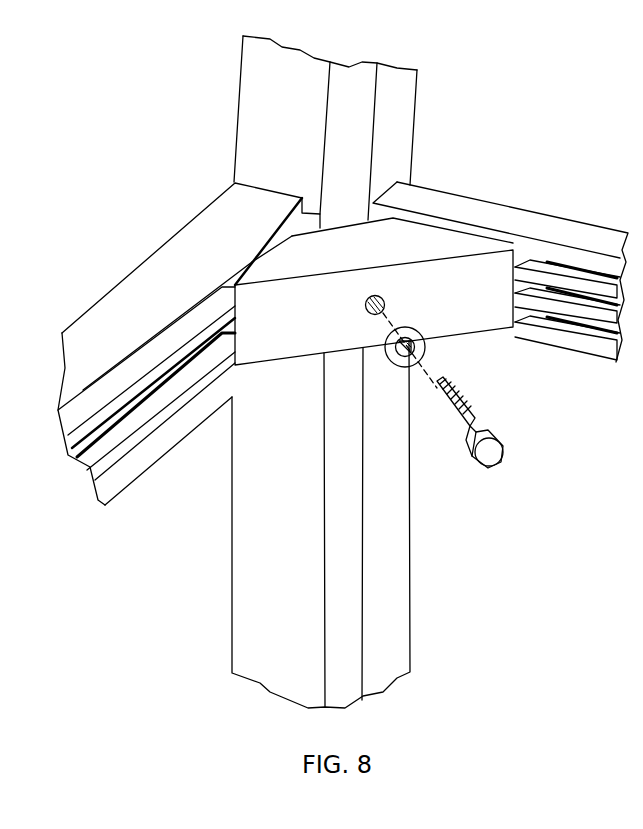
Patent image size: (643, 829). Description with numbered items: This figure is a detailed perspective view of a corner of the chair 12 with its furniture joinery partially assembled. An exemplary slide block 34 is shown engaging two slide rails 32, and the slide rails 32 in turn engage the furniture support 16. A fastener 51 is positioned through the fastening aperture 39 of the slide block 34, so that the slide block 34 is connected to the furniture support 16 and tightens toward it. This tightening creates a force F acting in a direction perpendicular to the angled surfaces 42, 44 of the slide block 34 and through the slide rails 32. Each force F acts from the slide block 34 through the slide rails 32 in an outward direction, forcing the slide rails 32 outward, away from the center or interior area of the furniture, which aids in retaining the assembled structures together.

The chair 12 is at (522, 50).
The furniture support 16 is at (394, 557).
The slide rail 32 is at (120, 302).
The slide block 34 is at (457, 327).
The fastening aperture 39 is at (366, 308).
The angled surface 42 is at (420, 226).
The angled surface 44 is at (293, 237).
The fastener 51 is at (503, 452).